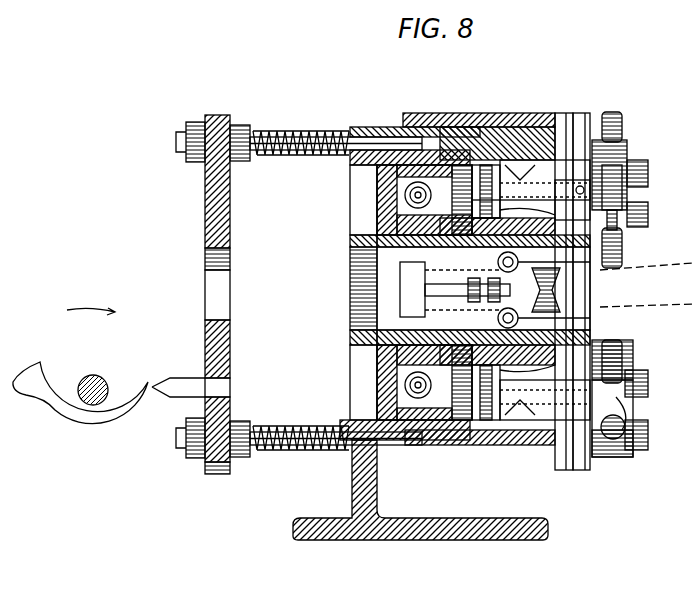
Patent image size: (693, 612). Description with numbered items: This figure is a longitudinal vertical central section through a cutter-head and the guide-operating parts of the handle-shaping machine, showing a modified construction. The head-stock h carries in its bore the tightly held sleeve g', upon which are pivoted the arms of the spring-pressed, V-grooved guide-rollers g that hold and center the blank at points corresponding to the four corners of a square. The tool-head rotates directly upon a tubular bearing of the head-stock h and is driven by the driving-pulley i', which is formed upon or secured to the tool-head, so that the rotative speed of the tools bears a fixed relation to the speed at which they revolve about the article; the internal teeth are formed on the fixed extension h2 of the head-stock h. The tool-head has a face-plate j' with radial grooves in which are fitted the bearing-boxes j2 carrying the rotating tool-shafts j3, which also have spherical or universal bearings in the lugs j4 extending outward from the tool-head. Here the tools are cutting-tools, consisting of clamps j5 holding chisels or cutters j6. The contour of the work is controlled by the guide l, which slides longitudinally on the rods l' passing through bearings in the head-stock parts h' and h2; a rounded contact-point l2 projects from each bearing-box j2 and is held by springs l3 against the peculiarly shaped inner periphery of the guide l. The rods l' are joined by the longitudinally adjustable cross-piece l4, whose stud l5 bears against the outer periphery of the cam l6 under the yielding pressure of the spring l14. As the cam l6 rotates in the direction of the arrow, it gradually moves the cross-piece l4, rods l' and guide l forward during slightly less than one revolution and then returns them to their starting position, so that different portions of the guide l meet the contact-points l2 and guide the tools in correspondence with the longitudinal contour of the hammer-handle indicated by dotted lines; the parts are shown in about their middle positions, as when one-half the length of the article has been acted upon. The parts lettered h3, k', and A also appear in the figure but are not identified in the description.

The rods l' is at (299, 128).
The spring l14 is at (322, 128).
The extension from the head-stock h2 is at (380, 127).
The head-stock h is at (354, 292).
The head-stock bearing part h' is at (420, 490).
The bottom plate h3 is at (400, 447).
The driving-pulley i' is at (528, 290).
The guide l is at (545, 290).
The contact-point l2 is at (512, 180).
The springs l3 is at (515, 210).
The cross-piece l4 is at (205, 192).
The stud l5 is at (183, 378).
The cam l6 is at (80, 366).
The cam shaft k' is at (93, 408).
The face-plate j' is at (483, 191).
The bearing-boxes j2 is at (563, 178).
The tool-shafts j3 is at (482, 209).
The lugs j4 is at (405, 196).
The clamps j5 is at (628, 142).
The chisels or cutters j6 is at (608, 112).
The guide-rollers g is at (455, 295).
The sleeve g' is at (551, 290).
The workpiece A is at (556, 290).